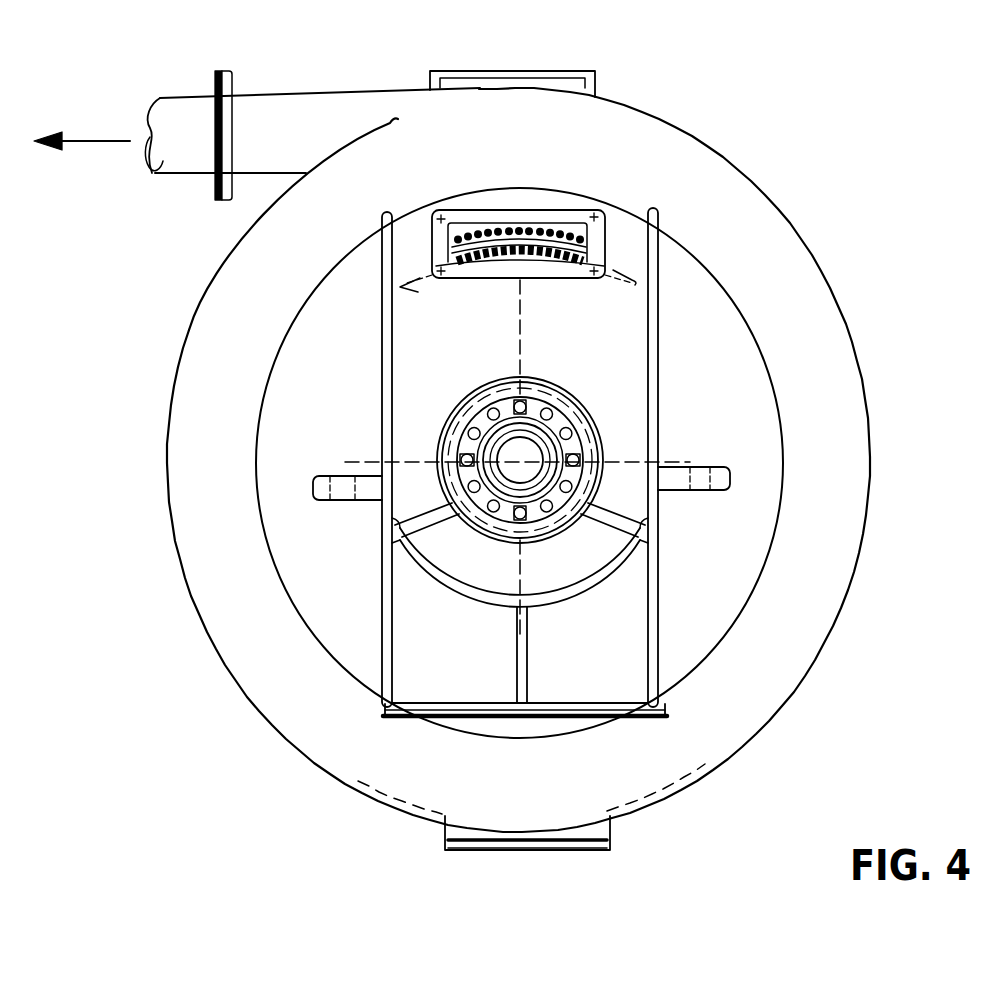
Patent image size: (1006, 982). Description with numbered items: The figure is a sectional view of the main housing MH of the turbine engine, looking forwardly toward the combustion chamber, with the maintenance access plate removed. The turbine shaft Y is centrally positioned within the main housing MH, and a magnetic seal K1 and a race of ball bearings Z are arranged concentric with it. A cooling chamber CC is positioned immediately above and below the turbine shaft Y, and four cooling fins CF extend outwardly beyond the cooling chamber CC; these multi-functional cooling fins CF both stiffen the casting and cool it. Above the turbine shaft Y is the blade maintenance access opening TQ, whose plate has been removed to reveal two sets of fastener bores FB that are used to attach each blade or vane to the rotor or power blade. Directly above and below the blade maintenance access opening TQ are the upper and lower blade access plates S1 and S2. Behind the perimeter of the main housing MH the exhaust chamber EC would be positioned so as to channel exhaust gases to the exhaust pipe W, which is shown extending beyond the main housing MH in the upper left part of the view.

The exhaust pipe W is at (173, 108).
The upper blade access plate S1 is at (438, 76).
The lower blade access plate S2 is at (471, 847).
The fastener bores FB is at (533, 227).
The blade maintenance access opening TQ is at (593, 225).
The exhaust chamber EC is at (823, 322).
The main housing MH is at (878, 512).
The cooling chamber CC is at (606, 548).
The turbine shaft Y is at (497, 483).
The magnetic seal K1 is at (452, 443).
The race of ball bearings Z is at (565, 424).
The cooling fins CF is at (508, 358).